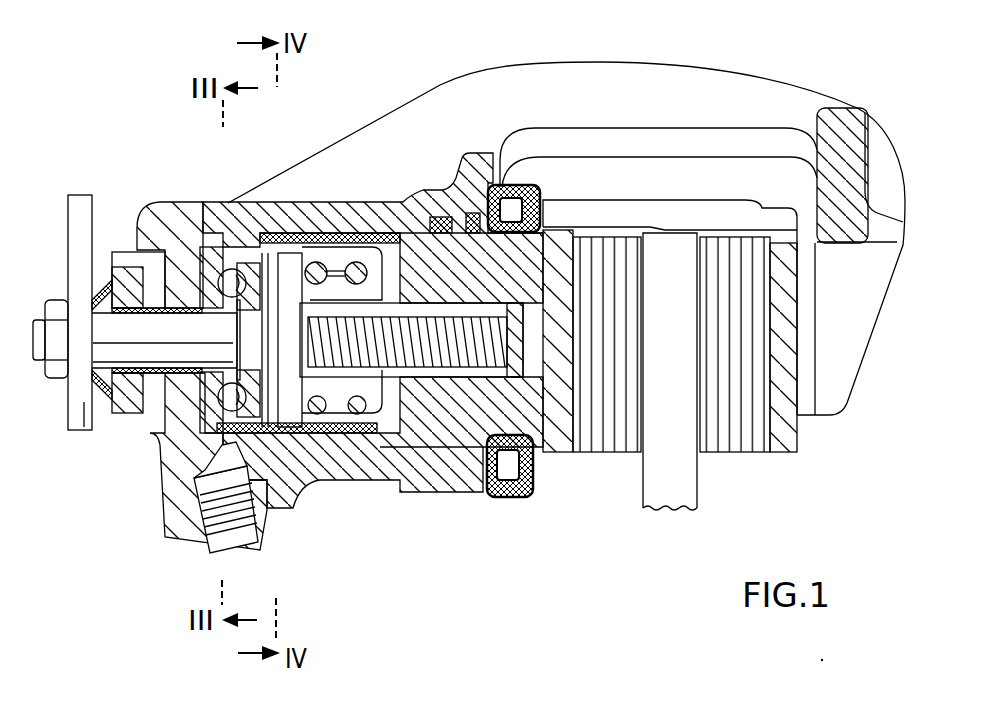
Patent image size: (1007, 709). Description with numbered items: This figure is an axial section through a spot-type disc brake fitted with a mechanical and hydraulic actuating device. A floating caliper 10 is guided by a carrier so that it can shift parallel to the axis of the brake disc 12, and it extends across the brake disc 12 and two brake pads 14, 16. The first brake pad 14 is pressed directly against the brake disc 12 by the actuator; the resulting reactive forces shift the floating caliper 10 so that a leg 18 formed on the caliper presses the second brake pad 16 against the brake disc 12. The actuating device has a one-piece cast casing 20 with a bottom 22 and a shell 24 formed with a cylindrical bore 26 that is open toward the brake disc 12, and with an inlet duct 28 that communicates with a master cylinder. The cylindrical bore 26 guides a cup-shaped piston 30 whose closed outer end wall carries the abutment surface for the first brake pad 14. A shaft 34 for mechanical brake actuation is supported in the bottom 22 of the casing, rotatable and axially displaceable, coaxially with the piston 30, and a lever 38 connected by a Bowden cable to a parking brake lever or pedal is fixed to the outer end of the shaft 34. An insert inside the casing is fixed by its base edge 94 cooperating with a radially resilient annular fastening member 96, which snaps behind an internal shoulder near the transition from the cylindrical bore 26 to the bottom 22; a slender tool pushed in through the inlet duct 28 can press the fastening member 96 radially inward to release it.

The floating caliper 10 is at (738, 62).
The brake disc 12 is at (672, 483).
The first brake pad 14 is at (597, 462).
The second brake pad 16 is at (745, 466).
The leg 18 is at (836, 400).
The casing 20 is at (340, 361).
The bottom 22 is at (158, 410).
The shell 24 is at (345, 468).
The cylindrical bore 26 is at (256, 250).
The inlet duct 28 is at (178, 481).
The cup-shaped piston 30 is at (404, 220).
The shaft 34 is at (157, 323).
The lever 38 is at (82, 206).
The base edge 94 is at (197, 202).
The fastening member 96 is at (236, 240).